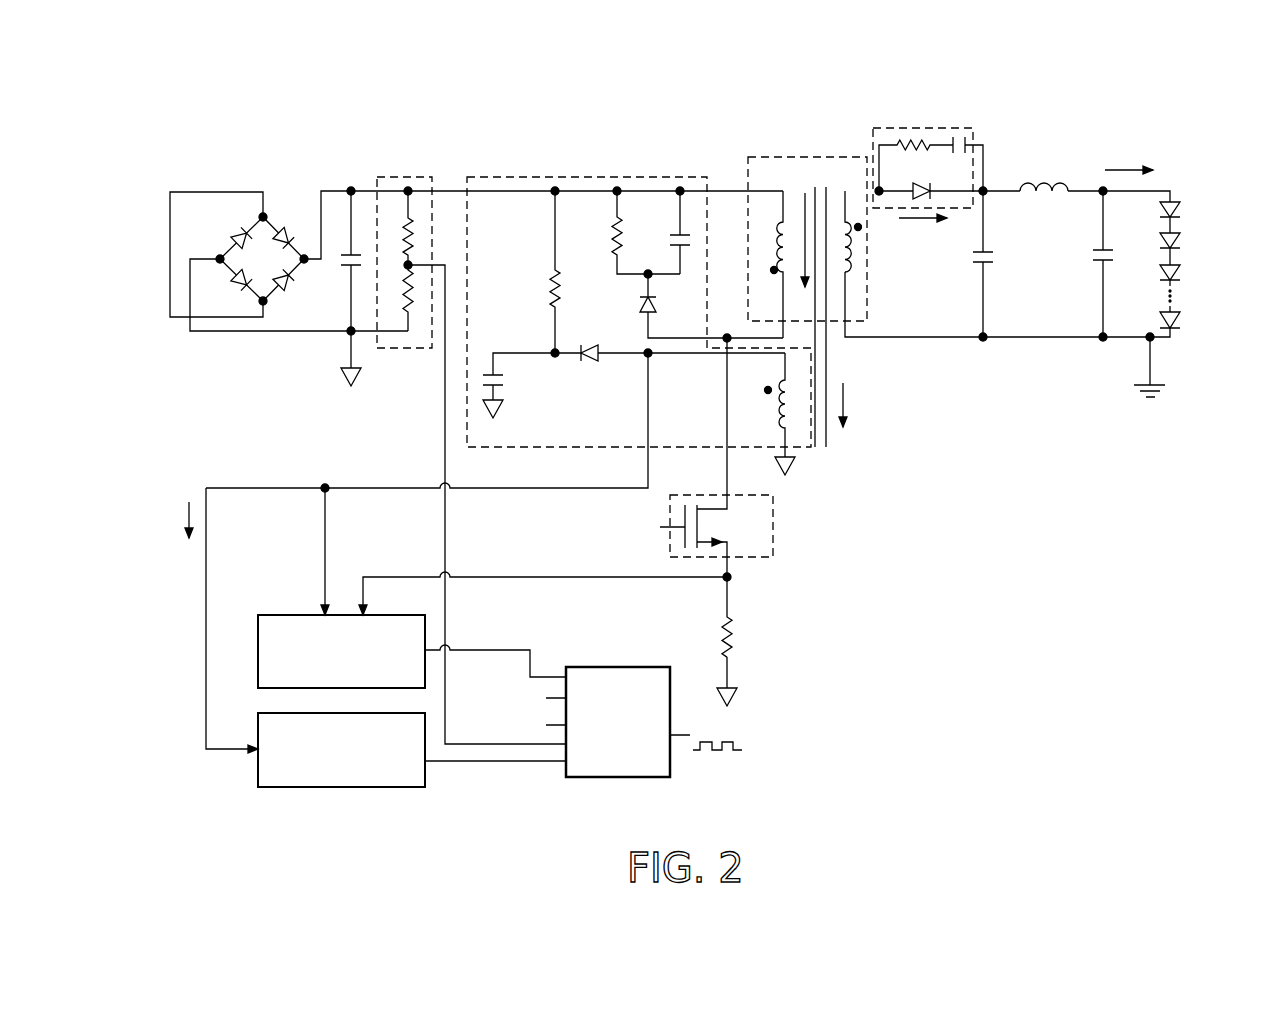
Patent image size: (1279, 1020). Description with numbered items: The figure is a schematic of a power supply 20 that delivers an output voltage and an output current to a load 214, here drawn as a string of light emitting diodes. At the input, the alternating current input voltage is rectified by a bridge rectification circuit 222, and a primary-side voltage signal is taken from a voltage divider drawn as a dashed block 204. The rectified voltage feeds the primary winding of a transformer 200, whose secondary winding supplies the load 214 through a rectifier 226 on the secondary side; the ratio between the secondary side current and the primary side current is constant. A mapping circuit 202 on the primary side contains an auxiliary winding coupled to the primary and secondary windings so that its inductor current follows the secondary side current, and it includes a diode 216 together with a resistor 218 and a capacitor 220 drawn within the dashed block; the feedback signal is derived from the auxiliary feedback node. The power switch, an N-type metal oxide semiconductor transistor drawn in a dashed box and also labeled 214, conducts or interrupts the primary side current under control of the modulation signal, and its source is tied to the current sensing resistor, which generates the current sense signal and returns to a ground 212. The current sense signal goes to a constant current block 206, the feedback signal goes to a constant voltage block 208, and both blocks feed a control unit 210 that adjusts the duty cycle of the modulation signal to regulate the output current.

The power supply 20 is at (710, 457).
The transformer 200 is at (813, 157).
The mapping circuit 202 is at (508, 308).
The voltage divider 204 is at (393, 177).
The constant current block 206 is at (285, 615).
The constant voltage block 208 is at (283, 790).
The control unit 210 is at (608, 778).
The ground 212 is at (738, 697).
The load 214 is at (1193, 270).
The diode 216 is at (588, 362).
The resistor 218 is at (548, 277).
The capacitor 220 is at (505, 377).
The bridge rectification circuit 222 is at (247, 222).
The rectifier 226 is at (940, 128).